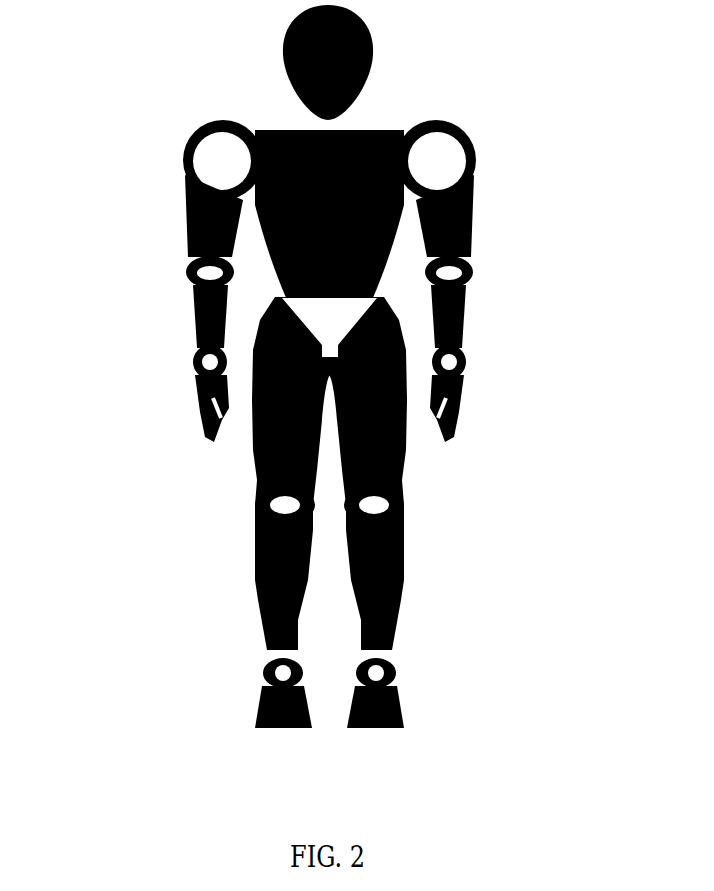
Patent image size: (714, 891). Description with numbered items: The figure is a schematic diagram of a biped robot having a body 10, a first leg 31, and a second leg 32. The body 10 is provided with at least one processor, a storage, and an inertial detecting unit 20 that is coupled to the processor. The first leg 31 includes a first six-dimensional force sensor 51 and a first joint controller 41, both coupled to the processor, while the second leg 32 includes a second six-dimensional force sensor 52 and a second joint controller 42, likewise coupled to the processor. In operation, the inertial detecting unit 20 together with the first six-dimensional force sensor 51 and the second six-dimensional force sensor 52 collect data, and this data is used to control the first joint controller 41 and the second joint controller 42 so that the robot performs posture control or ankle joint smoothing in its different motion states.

The body 10 is at (383, 130).
The inertial detecting unit 20 is at (262, 350).
The first leg 31 is at (260, 610).
The second leg 32 is at (400, 608).
The first joint controller 41 is at (262, 673).
The second joint controller 42 is at (398, 673).
The first six-dimensional force sensor 51 is at (260, 705).
The second six-dimensional force sensor 52 is at (402, 720).